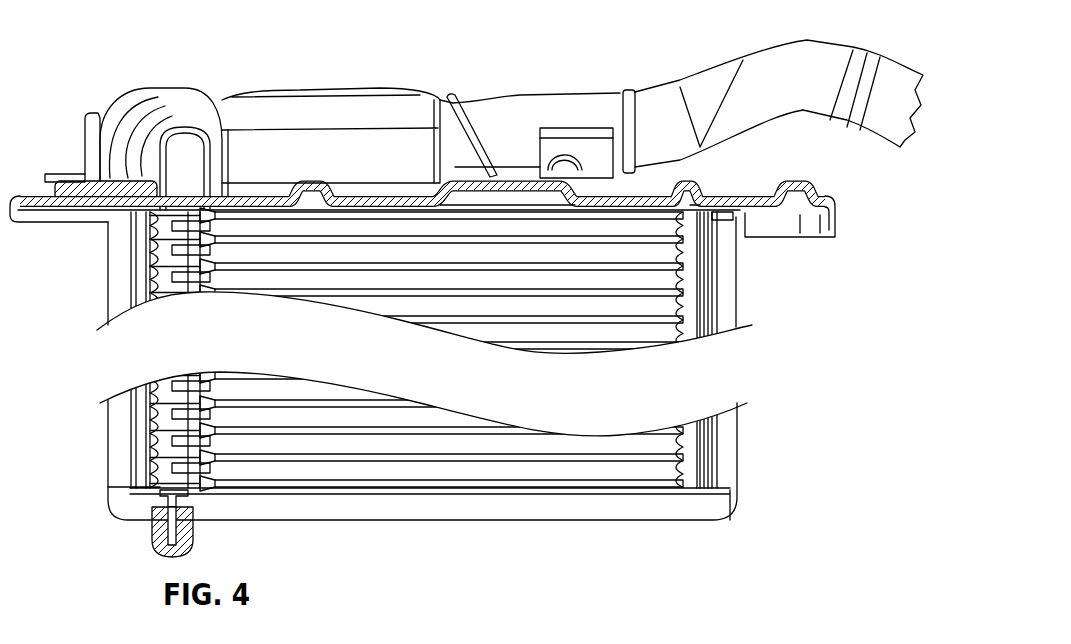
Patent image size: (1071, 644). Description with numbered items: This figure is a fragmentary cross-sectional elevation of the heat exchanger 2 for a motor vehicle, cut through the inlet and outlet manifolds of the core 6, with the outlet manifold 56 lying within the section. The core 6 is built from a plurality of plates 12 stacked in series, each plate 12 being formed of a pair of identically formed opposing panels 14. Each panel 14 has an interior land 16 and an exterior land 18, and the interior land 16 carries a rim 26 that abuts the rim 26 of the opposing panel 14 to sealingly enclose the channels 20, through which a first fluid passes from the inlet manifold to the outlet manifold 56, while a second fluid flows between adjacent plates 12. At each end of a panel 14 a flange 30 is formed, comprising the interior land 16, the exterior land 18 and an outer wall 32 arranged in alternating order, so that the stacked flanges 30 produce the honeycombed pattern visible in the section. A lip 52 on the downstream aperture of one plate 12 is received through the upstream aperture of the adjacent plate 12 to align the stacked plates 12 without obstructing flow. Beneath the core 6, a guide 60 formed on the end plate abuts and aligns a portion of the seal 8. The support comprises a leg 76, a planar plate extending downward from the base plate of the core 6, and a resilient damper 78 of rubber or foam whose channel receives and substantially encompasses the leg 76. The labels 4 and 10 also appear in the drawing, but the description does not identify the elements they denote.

The heat exchanger 2 is at (55, 78).
The housing cover 4 is at (274, 92).
The core 6 is at (426, 383).
The seal 8 is at (106, 278).
The drain arrangement 10 is at (102, 520).
The plate 12 is at (751, 292).
The panel 14 is at (712, 253).
The interior land 16 is at (150, 262).
The exterior land 18 is at (150, 241).
The channel 20 is at (281, 462).
The rim 26 is at (714, 312).
The flange 30 is at (126, 447).
The outer wall 32 is at (130, 222).
The lip 52 is at (186, 408).
The outlet manifold 56 is at (182, 266).
The guide 60 is at (473, 493).
The leg 76 is at (158, 494).
The damper 78 is at (150, 540).